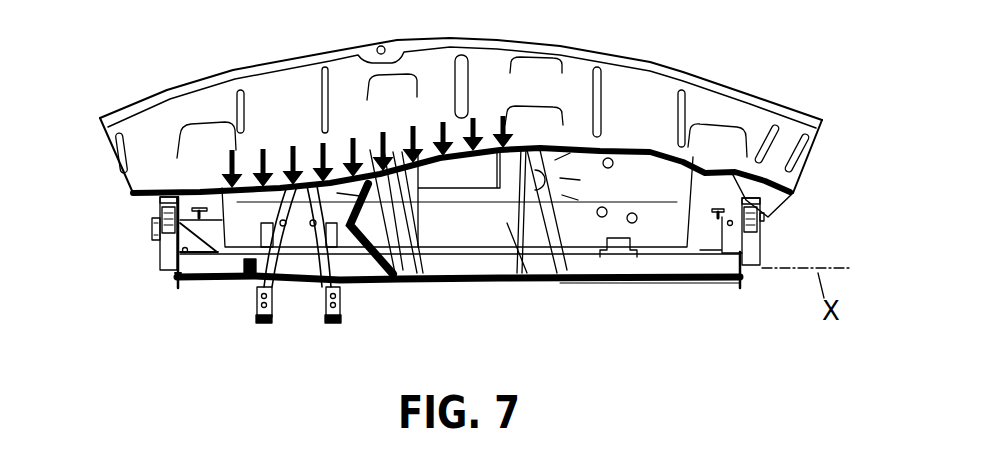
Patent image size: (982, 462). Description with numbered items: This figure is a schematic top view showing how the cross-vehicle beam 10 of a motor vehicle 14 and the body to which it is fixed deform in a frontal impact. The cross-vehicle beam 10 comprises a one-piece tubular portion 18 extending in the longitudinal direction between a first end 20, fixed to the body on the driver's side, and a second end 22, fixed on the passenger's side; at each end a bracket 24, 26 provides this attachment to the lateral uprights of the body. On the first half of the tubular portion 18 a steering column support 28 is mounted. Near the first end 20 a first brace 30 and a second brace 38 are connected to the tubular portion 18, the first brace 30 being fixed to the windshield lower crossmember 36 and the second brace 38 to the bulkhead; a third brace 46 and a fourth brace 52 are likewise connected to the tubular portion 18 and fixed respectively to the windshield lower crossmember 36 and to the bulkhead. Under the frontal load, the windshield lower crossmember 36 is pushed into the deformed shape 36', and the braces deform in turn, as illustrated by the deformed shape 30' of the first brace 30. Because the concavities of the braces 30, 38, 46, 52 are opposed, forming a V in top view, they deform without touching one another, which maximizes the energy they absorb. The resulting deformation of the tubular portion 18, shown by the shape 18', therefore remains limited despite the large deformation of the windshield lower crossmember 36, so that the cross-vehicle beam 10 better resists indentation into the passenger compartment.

The cross-vehicle beam 10 is at (722, 302).
The motor vehicle 14 is at (655, 220).
The tubular portion 18 is at (161, 257).
The deformed shape of tubular portion 18' is at (453, 312).
The first end 20 is at (176, 279).
The second end 22 is at (744, 277).
The bracket 24 is at (162, 255).
The bracket 26 is at (753, 240).
The steering column support 28 is at (257, 313).
The first brace 30 is at (321, 272).
The deformed shape of first brace 30' is at (355, 288).
The windshield lower crossmember 36 is at (461, 122).
The deformed shape of windshield lower crossmember 36' is at (430, 122).
The second brace 38 is at (408, 220).
The third brace 46 is at (547, 207).
The fourth brace 52 is at (517, 222).